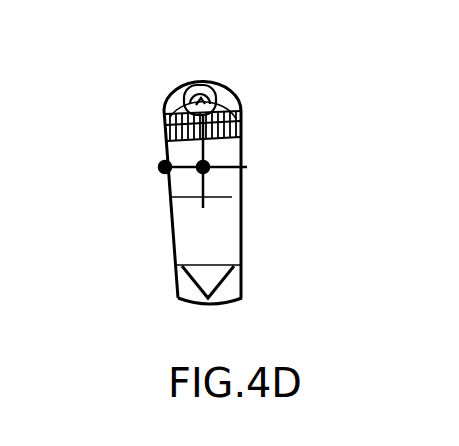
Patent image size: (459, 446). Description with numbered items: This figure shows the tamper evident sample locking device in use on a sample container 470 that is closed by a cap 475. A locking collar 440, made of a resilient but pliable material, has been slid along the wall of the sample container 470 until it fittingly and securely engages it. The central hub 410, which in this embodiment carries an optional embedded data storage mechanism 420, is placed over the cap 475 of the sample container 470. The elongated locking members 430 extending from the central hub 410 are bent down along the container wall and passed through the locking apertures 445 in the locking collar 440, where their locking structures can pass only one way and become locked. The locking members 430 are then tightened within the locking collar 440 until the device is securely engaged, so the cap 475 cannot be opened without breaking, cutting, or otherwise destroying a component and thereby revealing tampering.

The central hub 410 is at (186, 88).
The embedded data storage mechanism 420 is at (202, 100).
The locking members 430 is at (165, 113).
The locking collar 440 is at (166, 170).
The locking apertures 445 is at (160, 168).
The sample container 470 is at (239, 237).
The cap 475 is at (167, 133).